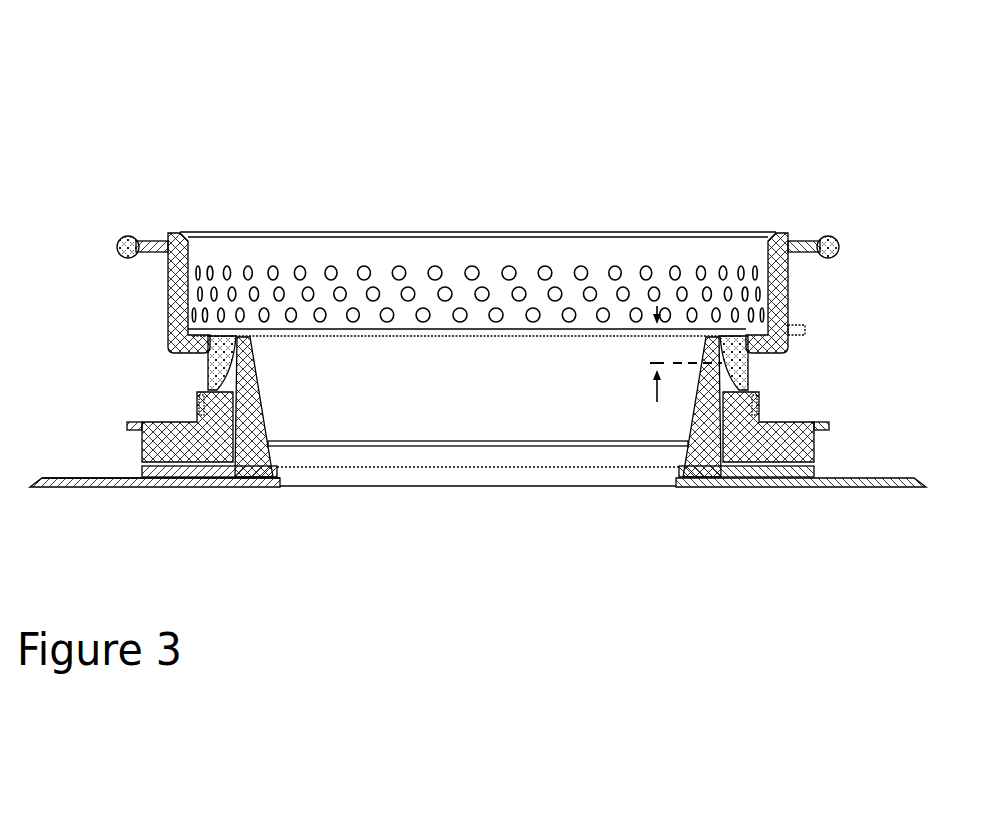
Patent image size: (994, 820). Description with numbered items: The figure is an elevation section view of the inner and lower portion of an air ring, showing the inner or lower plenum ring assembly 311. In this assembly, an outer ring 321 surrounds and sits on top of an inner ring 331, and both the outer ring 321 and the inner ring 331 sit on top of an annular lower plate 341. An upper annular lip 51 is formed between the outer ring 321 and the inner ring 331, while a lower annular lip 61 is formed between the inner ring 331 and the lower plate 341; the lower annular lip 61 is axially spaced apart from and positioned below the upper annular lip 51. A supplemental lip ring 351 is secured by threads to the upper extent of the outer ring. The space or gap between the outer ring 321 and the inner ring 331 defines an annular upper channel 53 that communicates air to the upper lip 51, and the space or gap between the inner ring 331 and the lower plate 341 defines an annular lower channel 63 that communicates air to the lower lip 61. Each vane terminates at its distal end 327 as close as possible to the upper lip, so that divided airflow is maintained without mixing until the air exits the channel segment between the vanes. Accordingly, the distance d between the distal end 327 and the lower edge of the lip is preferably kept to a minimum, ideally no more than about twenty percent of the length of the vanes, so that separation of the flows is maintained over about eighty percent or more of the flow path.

The inner or lower plenum ring assembly 311 is at (478, 189).
The supplemental lip ring 351 is at (783, 243).
The distal end of vane 327 is at (238, 356).
The upper annular lip 51 is at (237, 338).
The outer ring 321 is at (177, 430).
The annular upper channel 53 is at (145, 468).
The lower annular lip 61 is at (273, 463).
The annular lower channel 63 is at (143, 478).
The inner ring 331 is at (254, 428).
The annular lower plate 341 is at (850, 477).
The distance d is at (685, 372).